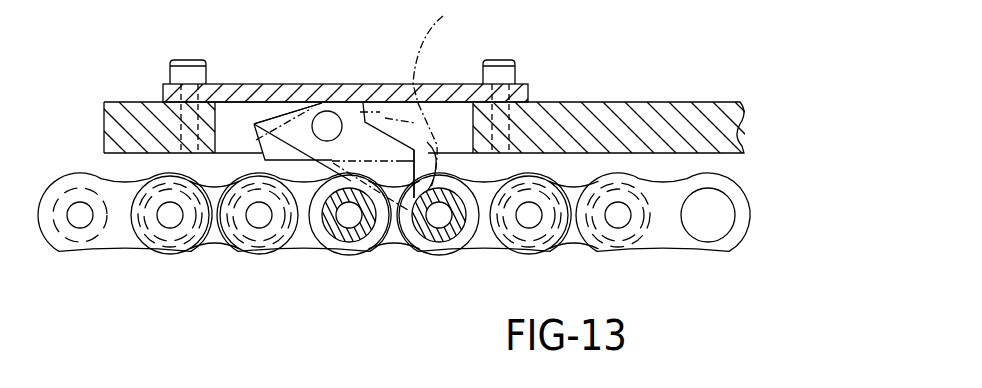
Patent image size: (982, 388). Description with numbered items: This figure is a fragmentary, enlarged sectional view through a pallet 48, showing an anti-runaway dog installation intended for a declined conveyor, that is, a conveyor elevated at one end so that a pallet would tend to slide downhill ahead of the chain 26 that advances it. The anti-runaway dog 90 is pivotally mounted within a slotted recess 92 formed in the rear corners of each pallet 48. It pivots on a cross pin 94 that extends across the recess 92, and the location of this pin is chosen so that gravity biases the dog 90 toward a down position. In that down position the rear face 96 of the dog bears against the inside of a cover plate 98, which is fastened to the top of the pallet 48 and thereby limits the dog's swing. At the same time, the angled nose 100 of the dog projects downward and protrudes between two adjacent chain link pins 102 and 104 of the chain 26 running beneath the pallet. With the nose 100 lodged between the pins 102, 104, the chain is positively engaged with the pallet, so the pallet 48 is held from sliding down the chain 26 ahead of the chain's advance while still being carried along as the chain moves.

The chain 26 is at (128, 258).
The pallet 48 is at (588, 102).
The anti-runaway dog 90 is at (365, 123).
The slotted recess 92 is at (220, 127).
The cross pin 94 is at (318, 110).
The rear face 96 is at (267, 103).
The cover plate 98 is at (447, 84).
The angled nose 100 is at (412, 243).
The chain link pin 102 is at (333, 248).
The chain link pin 104 is at (463, 243).